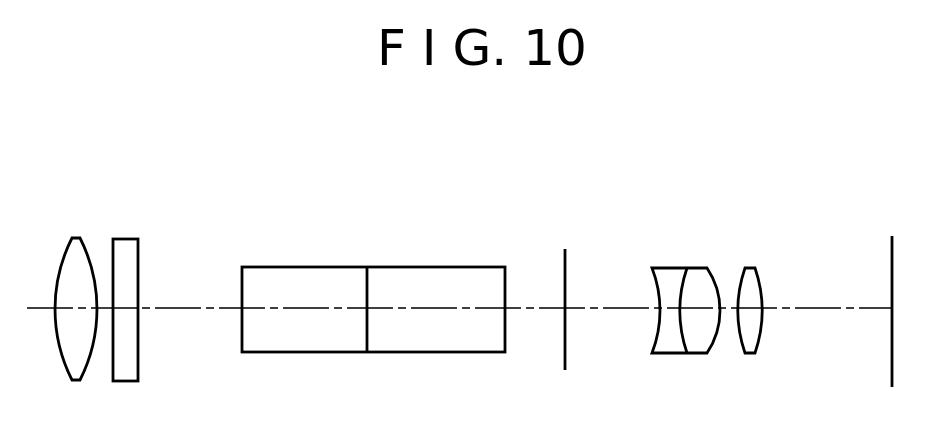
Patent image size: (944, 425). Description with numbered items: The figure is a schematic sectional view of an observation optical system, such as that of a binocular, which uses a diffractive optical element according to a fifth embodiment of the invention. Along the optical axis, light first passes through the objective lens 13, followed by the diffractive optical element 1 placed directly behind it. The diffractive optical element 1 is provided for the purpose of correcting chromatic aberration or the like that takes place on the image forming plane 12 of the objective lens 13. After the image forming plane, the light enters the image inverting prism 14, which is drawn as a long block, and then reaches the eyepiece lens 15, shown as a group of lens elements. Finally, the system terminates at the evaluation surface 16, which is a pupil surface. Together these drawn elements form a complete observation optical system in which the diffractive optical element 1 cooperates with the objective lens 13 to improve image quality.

The diffractive optical element 1 is at (138, 255).
The image forming plane 12 is at (566, 260).
The objective lens 13 is at (78, 255).
The image inverting prism 14 is at (347, 280).
The eyepiece lens 15 is at (767, 240).
The evaluation surface 16 is at (890, 268).